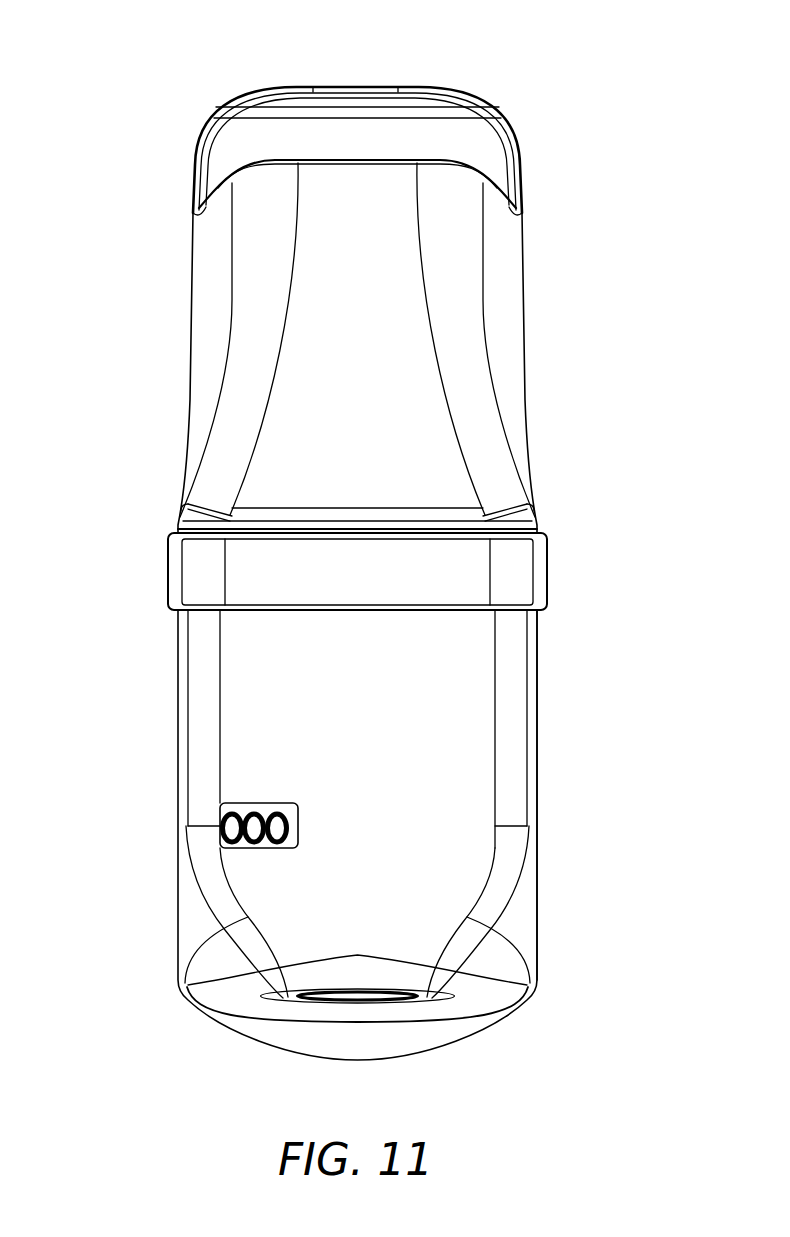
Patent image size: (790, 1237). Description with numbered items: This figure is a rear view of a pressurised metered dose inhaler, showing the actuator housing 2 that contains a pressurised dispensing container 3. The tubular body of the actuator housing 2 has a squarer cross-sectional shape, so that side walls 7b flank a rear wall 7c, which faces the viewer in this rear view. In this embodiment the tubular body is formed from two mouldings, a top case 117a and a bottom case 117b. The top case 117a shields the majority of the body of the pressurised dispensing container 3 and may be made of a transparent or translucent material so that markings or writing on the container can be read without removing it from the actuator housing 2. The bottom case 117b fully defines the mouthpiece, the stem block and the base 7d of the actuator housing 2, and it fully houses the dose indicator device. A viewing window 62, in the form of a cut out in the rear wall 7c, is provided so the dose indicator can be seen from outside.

The actuator housing 2 is at (548, 238).
The pressurised dispensing container 3 is at (480, 136).
The side walls 7b is at (524, 363).
The rear wall 7c is at (352, 183).
The base 7d is at (442, 1058).
The viewing window 62 is at (299, 825).
The top case 117a is at (162, 372).
The bottom case 117b is at (555, 700).